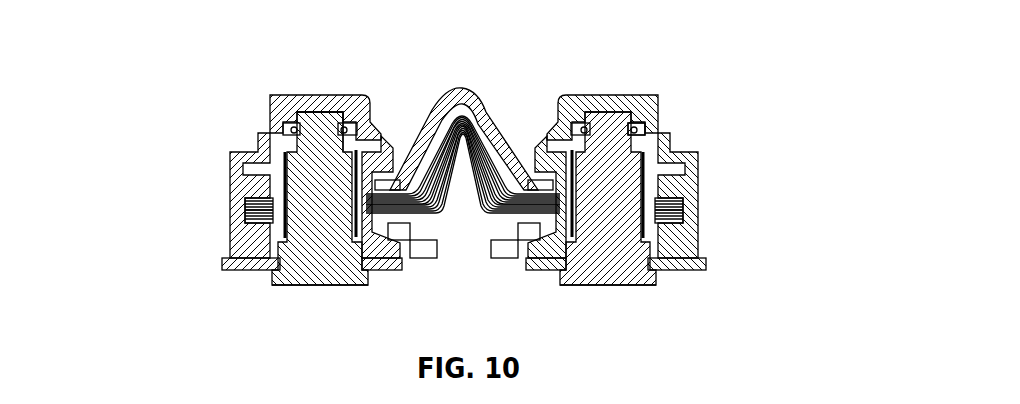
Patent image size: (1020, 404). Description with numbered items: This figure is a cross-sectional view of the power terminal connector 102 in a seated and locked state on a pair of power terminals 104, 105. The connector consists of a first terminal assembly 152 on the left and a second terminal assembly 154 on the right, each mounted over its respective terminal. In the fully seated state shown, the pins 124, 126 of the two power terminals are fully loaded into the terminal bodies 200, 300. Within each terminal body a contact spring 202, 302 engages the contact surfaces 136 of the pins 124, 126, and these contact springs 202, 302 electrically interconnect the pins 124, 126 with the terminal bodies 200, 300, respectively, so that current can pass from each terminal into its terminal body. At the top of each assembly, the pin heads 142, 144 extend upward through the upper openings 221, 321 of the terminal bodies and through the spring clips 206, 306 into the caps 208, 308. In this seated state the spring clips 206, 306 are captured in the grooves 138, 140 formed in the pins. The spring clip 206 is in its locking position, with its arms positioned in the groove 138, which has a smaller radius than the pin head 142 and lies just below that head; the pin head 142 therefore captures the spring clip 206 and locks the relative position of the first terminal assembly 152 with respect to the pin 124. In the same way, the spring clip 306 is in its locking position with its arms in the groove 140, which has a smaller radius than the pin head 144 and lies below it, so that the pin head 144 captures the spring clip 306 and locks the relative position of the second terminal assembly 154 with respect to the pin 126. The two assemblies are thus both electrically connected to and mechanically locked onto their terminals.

The power terminal connector 102 is at (763, 80).
The power terminal 104 is at (300, 293).
The power terminal 105 is at (626, 293).
The pin 124 is at (318, 258).
The pin 126 is at (595, 258).
The contact surfaces 136 is at (283, 210).
The groove 138 is at (334, 126).
The groove 140 is at (599, 126).
The pin head 142 is at (312, 128).
The pin head 144 is at (634, 126).
The first terminal assembly 152 is at (229, 95).
The second terminal assembly 154 is at (688, 68).
The terminal body 200 is at (270, 177).
The contact spring 202 is at (275, 212).
The spring clip 206 is at (283, 133).
The cap 208 is at (287, 100).
The upper opening 221 is at (349, 137).
The terminal body 300 is at (655, 165).
The contact spring 302 is at (652, 187).
The spring clip 306 is at (653, 133).
The cap 308 is at (660, 99).
The upper opening 321 is at (571, 136).